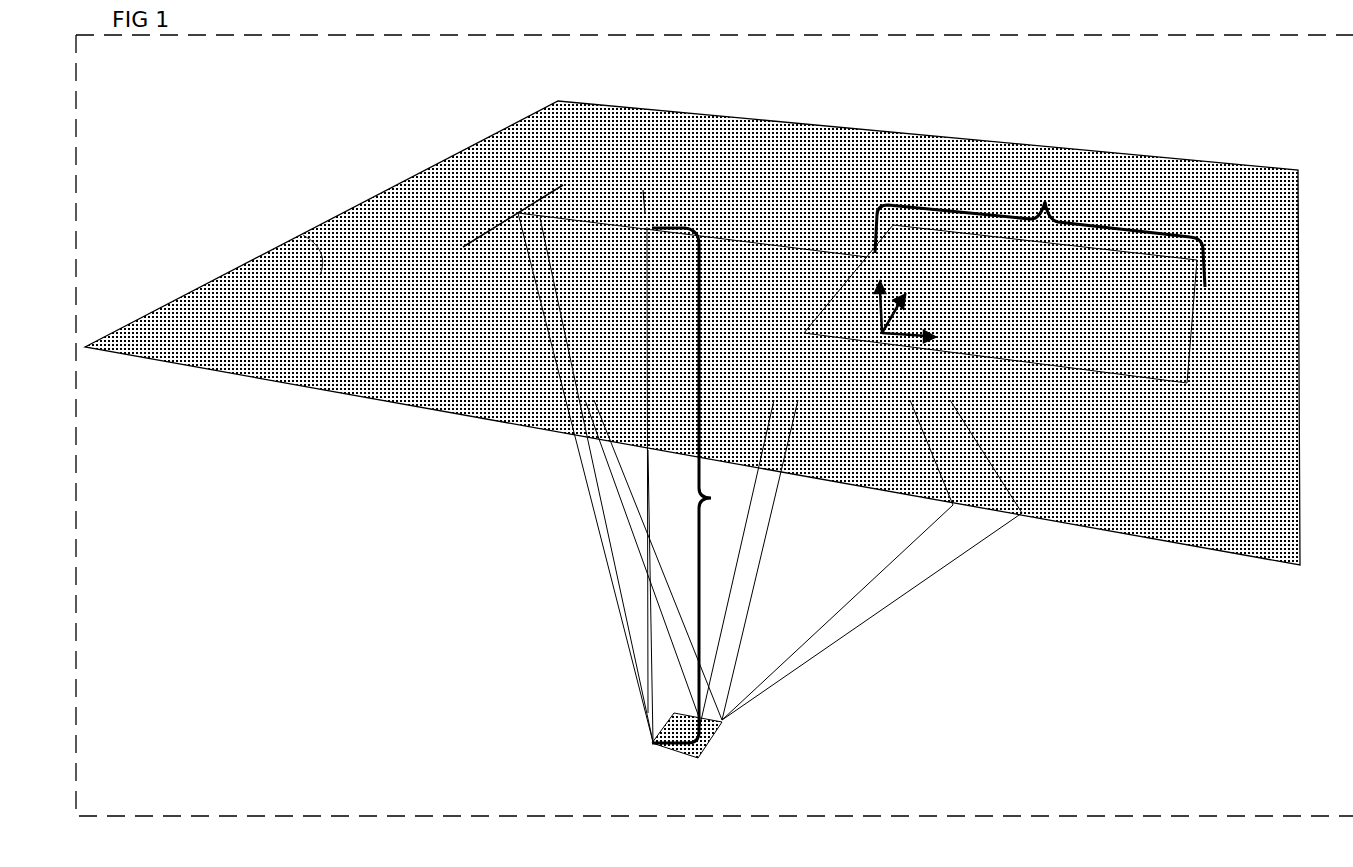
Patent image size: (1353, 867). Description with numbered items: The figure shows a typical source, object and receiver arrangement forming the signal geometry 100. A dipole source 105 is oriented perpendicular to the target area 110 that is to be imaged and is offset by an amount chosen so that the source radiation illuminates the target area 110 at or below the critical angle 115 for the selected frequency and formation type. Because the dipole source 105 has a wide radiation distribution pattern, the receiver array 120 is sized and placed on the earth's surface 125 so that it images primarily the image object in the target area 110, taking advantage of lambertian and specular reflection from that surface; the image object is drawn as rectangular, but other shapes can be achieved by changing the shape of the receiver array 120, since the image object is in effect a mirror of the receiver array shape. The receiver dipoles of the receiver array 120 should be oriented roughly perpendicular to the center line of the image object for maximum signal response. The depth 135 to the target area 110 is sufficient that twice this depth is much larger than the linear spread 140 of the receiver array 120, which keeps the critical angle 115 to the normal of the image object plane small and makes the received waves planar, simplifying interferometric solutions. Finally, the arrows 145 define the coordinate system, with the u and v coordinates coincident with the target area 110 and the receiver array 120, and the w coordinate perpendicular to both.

The signal geometry 100 is at (536, 815).
The dipole source 105 is at (518, 213).
The target area 110 is at (723, 740).
The critical angle 115 is at (637, 612).
The receiver array 120 is at (1193, 330).
The earth's surface 125 is at (303, 235).
The depth 135 is at (713, 498).
The linear spread 140 is at (1043, 200).
The arrows 145 is at (1042, 513).